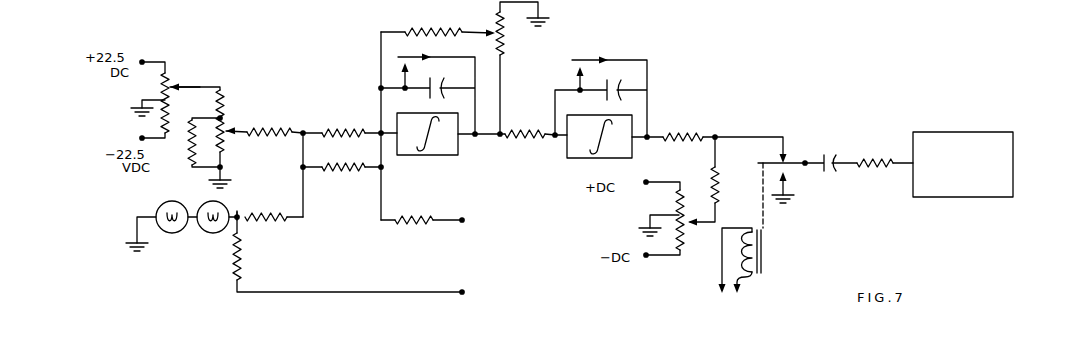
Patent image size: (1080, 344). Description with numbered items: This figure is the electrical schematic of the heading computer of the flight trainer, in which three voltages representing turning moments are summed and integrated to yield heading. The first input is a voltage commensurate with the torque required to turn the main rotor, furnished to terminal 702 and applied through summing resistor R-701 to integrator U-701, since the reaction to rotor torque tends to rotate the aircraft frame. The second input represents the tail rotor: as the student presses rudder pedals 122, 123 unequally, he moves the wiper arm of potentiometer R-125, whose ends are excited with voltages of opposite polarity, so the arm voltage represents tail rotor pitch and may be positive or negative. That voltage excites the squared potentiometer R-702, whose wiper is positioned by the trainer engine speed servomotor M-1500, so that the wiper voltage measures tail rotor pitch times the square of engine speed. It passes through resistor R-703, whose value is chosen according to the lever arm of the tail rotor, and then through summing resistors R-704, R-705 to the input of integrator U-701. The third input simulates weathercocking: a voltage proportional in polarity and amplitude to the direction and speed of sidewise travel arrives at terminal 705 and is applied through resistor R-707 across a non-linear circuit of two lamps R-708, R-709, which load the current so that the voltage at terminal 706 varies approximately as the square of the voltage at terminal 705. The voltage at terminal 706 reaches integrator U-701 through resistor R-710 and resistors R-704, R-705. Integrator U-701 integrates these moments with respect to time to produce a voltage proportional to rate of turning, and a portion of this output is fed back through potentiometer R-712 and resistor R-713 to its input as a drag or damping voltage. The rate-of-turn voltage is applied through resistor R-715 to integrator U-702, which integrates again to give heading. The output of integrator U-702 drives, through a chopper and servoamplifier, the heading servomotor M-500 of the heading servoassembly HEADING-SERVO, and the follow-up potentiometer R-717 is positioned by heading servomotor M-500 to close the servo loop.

The potentiometer R-125 is at (143, 103).
The rudder pedal 122 is at (187, 73).
The rudder pedal 123 is at (203, 61).
The squared potentiometer R-702 is at (238, 146).
The trainer engine speed servomotor M-1500 is at (243, 120).
The resistor R-703 is at (294, 130).
The summing resistor R-704 is at (365, 131).
The summing resistor R-705 is at (365, 163).
The integrator U-701 is at (450, 158).
The resistor R-713 is at (452, 26).
The potentiometer R-712 is at (506, 25).
The resistor R-715 is at (505, 124).
The integrator U-702 is at (625, 162).
The follow-up potentiometer R-717 is at (677, 202).
The heading servomotor M-500 is at (700, 227).
The heading servoassembly HEADING-SERVO is at (963, 164).
The lamp R-708 is at (192, 235).
The lamp R-709 is at (218, 235).
The terminal 706 is at (239, 206).
The resistor R-710 is at (297, 229).
The resistor R-707 is at (258, 251).
The terminal 705 is at (476, 292).
The summing resistor R-701 is at (433, 204).
The terminal 702 is at (476, 220).